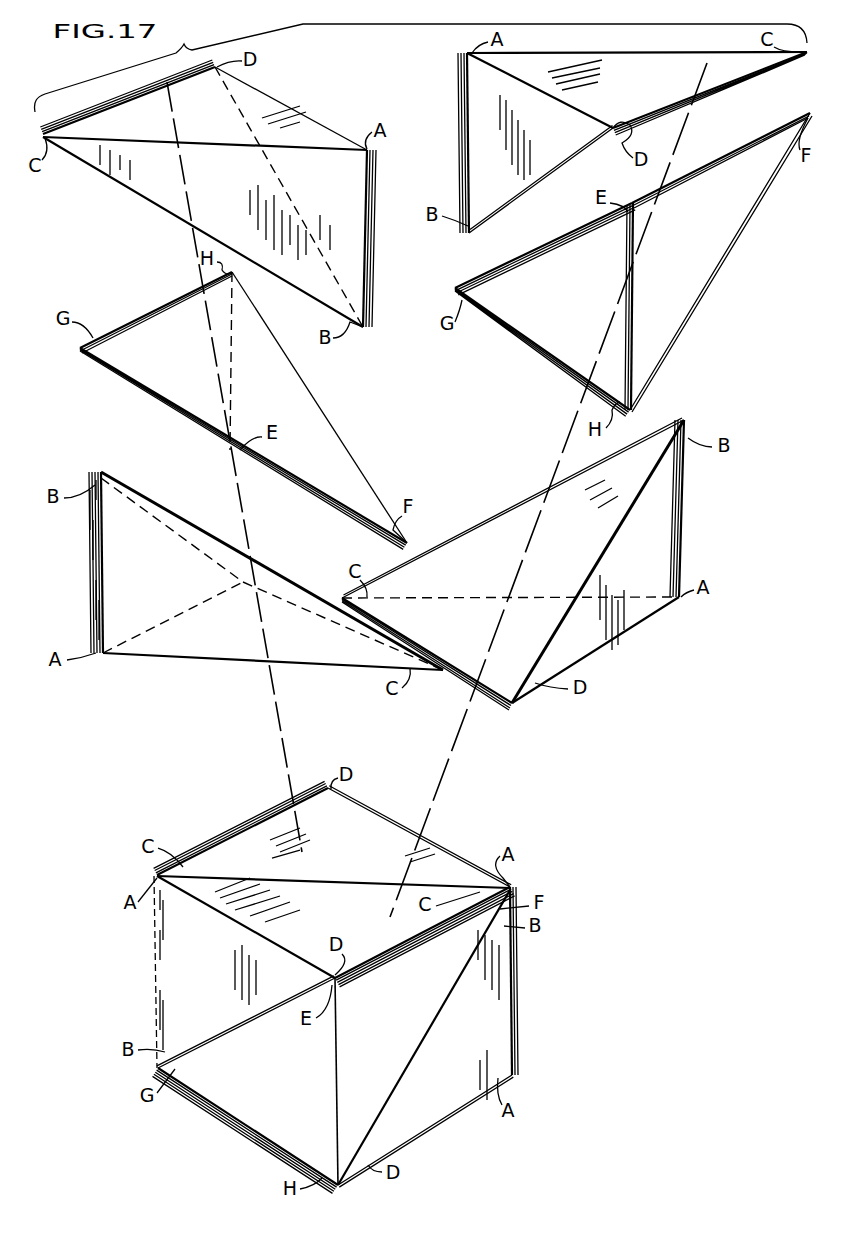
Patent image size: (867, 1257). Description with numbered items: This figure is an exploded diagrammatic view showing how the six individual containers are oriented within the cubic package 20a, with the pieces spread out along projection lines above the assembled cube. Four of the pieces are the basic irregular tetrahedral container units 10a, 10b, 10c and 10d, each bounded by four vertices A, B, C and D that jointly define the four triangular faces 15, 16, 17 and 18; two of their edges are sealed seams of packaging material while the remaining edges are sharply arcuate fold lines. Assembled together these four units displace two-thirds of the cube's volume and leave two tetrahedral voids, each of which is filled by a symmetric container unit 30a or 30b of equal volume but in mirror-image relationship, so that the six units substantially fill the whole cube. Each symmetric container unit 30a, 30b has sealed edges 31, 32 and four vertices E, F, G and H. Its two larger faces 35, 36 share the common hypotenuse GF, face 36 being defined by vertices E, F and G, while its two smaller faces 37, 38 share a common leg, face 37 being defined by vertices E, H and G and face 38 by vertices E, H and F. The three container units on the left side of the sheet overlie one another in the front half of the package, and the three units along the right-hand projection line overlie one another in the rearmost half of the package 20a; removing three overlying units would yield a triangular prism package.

The container unit 10a is at (152, 199).
The container unit 10b is at (213, 674).
The container unit 10c is at (657, 46).
The container unit 10d is at (625, 651).
The triangular face 15 is at (193, 201).
The triangular face 16 is at (549, 557).
The triangular face 17 is at (193, 124).
The triangular face 18 is at (518, 136).
The package 20a is at (535, 975).
The symmetric container unit 30a is at (128, 402).
The symmetric container unit 30b is at (712, 297).
The sealed edge 31 is at (162, 302).
The sealed edge 32 is at (313, 495).
The larger area face 35 is at (249, 405).
The larger area face 36 is at (257, 465).
The smaller face 37 is at (552, 297).
The smaller face 38 is at (679, 235).